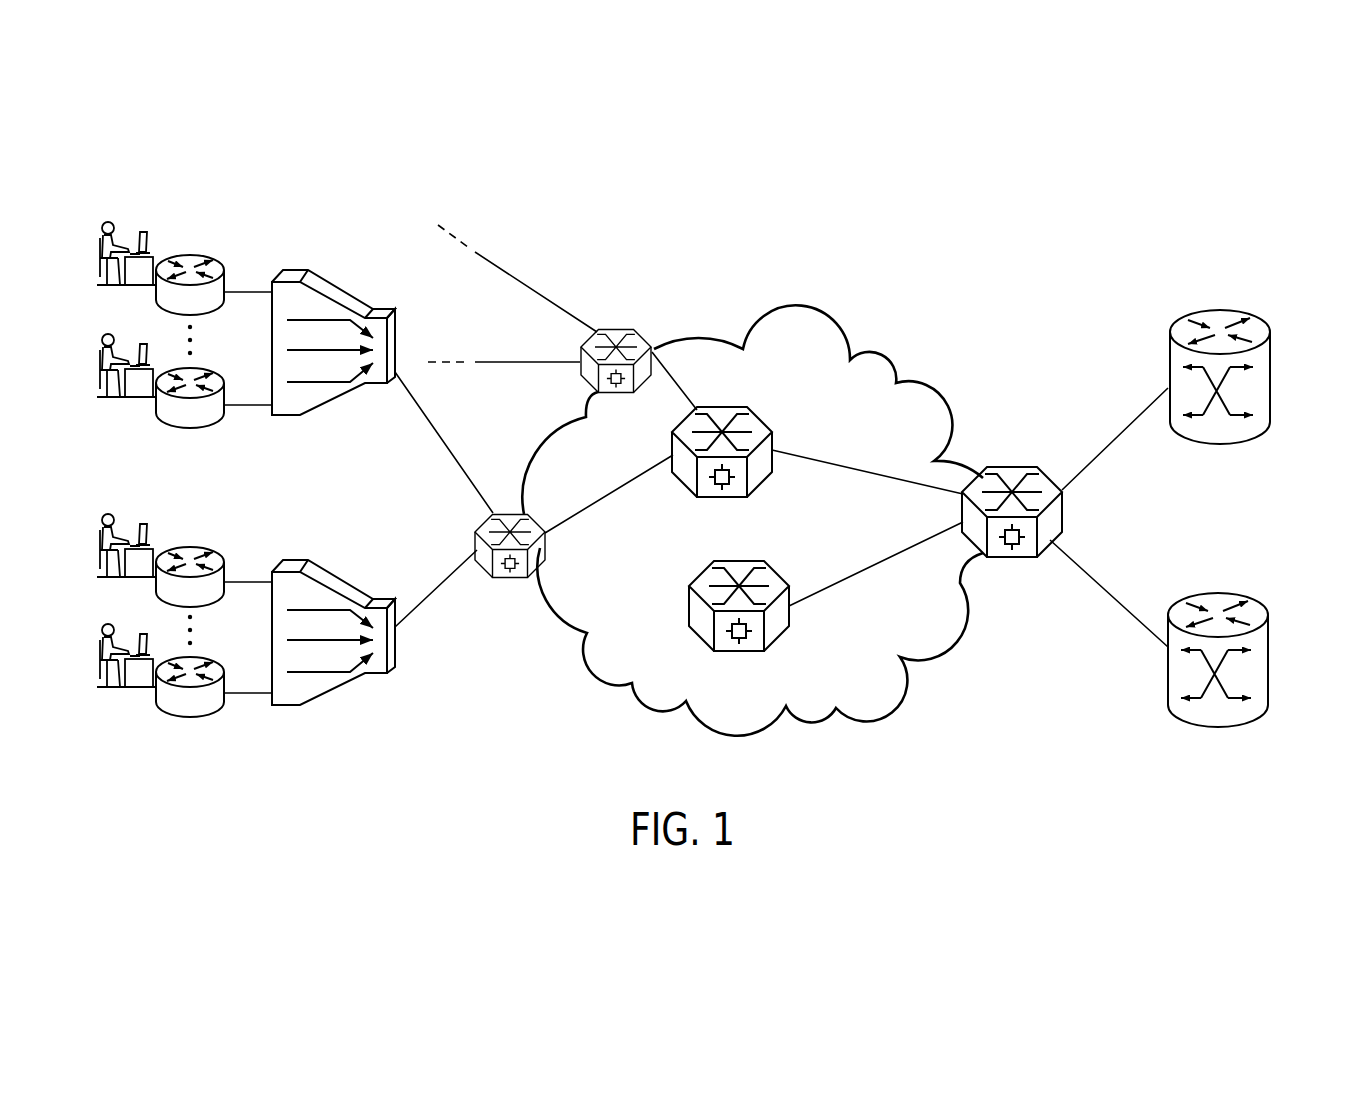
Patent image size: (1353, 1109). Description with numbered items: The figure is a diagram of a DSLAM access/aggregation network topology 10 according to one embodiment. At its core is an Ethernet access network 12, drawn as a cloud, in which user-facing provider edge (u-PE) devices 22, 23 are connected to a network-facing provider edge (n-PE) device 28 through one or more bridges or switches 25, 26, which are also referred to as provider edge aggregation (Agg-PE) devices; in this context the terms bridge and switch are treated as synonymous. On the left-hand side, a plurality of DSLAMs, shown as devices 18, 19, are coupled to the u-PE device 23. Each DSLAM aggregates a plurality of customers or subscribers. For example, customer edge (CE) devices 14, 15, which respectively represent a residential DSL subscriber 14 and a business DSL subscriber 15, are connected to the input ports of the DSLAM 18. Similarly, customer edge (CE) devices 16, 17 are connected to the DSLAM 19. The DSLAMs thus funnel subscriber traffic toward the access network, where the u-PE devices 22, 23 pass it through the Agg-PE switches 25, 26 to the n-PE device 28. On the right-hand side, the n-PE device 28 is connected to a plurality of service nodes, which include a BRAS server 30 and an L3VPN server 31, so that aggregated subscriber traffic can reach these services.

The DSLAM access/aggregation network topology 10 is at (975, 242).
The Ethernet access network 12 is at (923, 377).
The customer edge device 14 is at (186, 256).
The customer edge device 15 is at (202, 425).
The customer edge device 16 is at (207, 547).
The customer edge device 17 is at (203, 712).
The DSLAM 18 is at (333, 283).
The DSLAM 19 is at (332, 573).
The user-facing provider edge device 22 is at (640, 334).
The user-facing provider edge device 23 is at (503, 512).
The bridge or switch 25 is at (750, 411).
The bridge or switch 26 is at (779, 572).
The network-facing provider edge device 28 is at (1020, 467).
The BRAS server 30 is at (1272, 365).
The L3VPN server 31 is at (1272, 645).